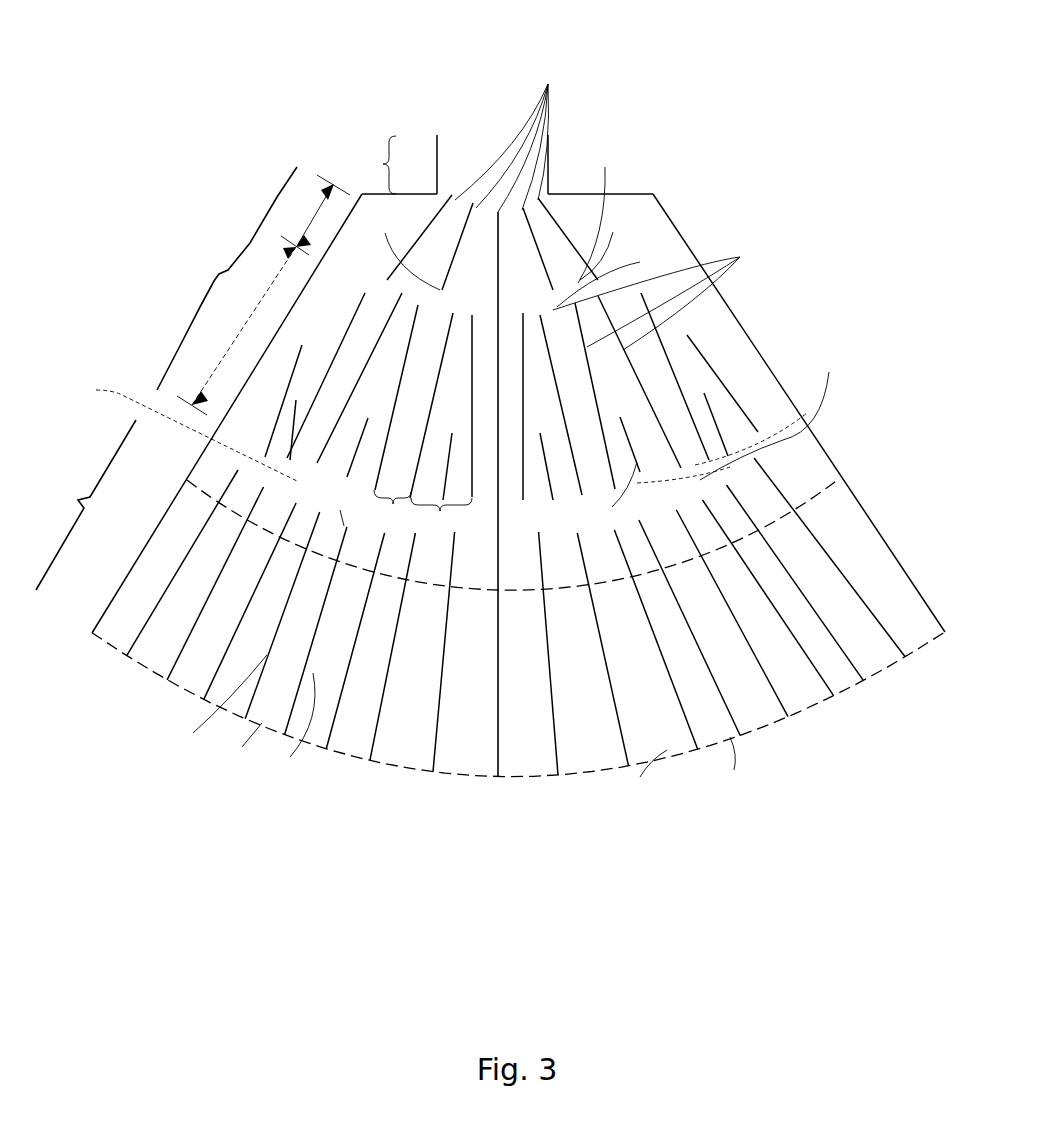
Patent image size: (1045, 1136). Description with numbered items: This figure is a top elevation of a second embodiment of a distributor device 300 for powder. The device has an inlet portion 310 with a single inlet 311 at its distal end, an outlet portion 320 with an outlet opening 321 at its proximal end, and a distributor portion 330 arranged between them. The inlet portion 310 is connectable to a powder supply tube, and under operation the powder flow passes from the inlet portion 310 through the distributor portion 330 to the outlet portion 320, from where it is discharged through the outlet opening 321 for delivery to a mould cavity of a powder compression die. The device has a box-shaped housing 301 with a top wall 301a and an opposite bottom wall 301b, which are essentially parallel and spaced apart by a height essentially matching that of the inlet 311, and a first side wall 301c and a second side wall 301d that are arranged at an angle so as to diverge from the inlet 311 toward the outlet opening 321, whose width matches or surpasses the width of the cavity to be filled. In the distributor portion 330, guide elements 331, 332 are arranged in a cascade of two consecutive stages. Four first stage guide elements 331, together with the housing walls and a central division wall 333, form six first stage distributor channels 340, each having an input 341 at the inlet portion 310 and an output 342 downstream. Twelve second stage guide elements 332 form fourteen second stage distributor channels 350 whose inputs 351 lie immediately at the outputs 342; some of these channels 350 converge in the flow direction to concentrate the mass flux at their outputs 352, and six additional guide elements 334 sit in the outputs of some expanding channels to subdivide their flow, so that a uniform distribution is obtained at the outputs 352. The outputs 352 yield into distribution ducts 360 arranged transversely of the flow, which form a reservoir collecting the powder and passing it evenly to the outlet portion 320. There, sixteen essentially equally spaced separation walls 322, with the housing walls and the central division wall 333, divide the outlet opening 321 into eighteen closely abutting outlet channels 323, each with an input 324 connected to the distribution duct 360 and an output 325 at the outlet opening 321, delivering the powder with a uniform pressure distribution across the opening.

The distributor device 300 is at (640, 87).
The box-shaped housing 301 is at (683, 190).
The top wall 301a is at (187, 690).
The bottom wall 301b is at (207, 490).
The first side wall 301c is at (123, 578).
The second side wall 301d is at (870, 512).
The inlet portion 310 is at (447, 125).
The inlet 311 is at (475, 145).
The outlet portion 320 is at (86, 505).
The outlet opening 321 is at (420, 680).
The separation walls 322 is at (240, 718).
The outlet channels 323 is at (285, 640).
The input of outlet channel 324 is at (340, 509).
The output of outlet channel 325 is at (488, 759).
The distributor portion 330 is at (253, 291).
The first stage guide elements 331 is at (598, 215).
The second stage guide elements 332 is at (654, 291).
The central division wall 333 is at (496, 762).
The additional guide elements 334 is at (611, 489).
The first stage distributor channels 340 is at (420, 258).
The input of first stage distributor channel 341 is at (511, 134).
The output of first stage distributor channel 342 is at (499, 251).
The second stage distributor channels 350 is at (297, 378).
The input of second stage distributor channel 351 is at (606, 276).
The output of second stage distributor channel 352 is at (608, 437).
The distribution ducts 360 is at (659, 511).